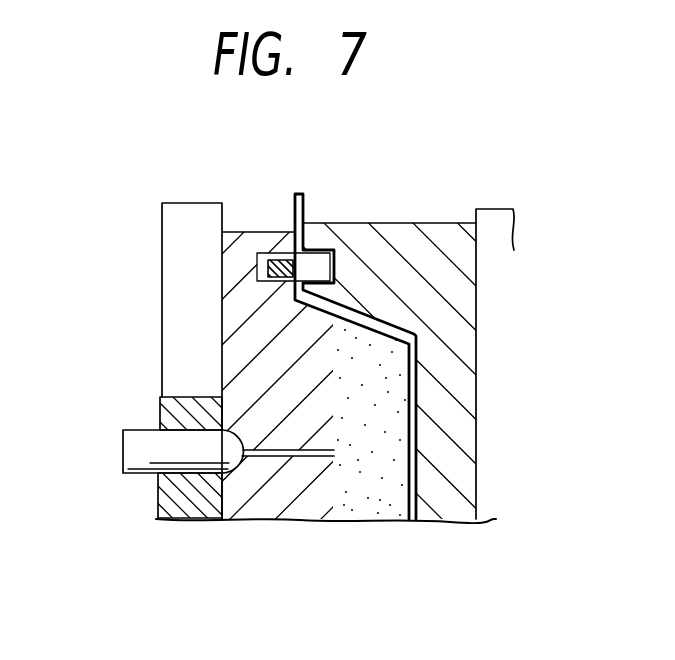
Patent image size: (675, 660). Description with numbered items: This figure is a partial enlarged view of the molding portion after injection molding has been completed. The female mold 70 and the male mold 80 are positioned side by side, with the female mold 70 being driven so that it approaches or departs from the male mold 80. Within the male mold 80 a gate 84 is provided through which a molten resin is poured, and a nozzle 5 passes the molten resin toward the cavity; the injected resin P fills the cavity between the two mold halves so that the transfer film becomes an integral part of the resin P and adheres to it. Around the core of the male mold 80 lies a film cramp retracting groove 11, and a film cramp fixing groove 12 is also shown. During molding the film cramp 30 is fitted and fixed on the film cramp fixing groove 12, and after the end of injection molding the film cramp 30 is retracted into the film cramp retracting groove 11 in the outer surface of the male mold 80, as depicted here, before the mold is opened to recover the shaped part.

The male mold 80 is at (247, 241).
The female mold 70 is at (424, 223).
The film cramp 30 is at (290, 262).
The film cramp retracting groove 11 is at (271, 255).
The film cramp fixing groove 12 is at (318, 270).
The nozzle 5 is at (137, 450).
The gate 84 is at (328, 453).
The injected resin P is at (372, 513).